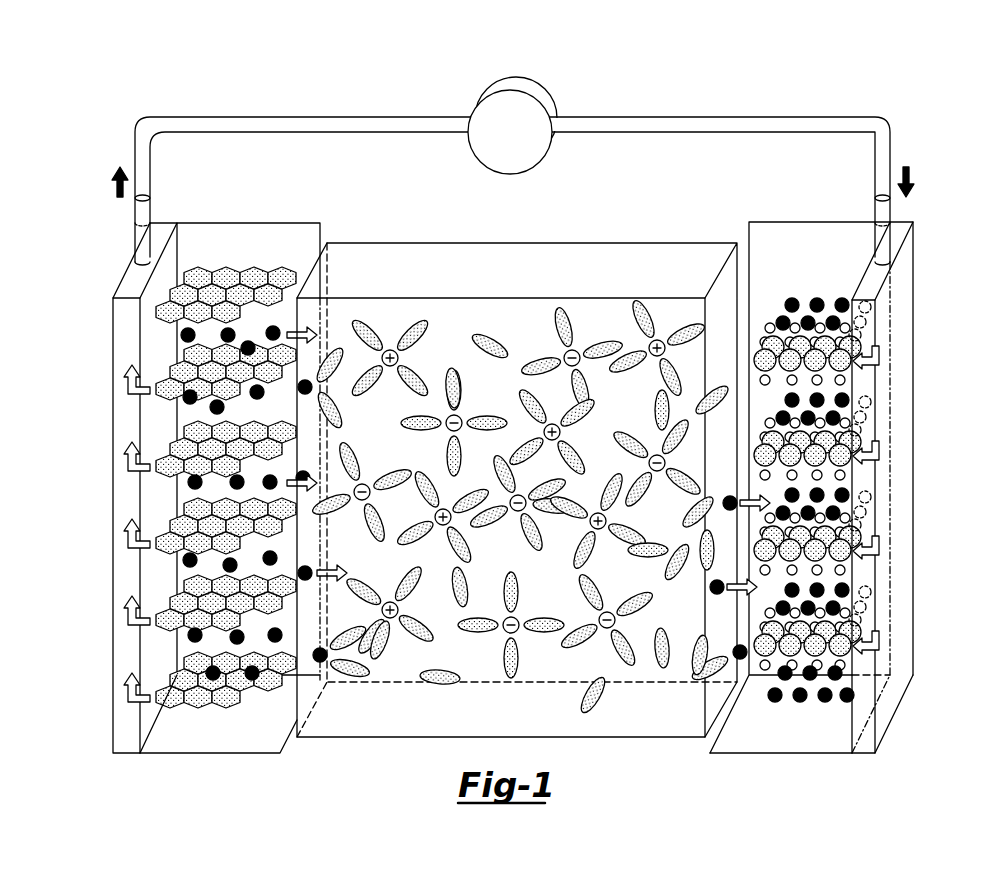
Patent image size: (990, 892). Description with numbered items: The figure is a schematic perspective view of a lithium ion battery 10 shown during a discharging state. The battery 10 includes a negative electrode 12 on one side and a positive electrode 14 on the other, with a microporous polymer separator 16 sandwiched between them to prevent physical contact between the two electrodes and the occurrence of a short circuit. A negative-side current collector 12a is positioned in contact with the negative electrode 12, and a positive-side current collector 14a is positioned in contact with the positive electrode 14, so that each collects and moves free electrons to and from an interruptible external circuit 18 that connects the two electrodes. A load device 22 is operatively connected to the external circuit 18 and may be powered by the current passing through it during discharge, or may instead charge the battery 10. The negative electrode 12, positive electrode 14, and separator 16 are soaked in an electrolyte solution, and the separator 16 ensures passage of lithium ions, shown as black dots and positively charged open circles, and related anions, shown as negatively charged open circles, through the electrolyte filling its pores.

The lithium ion battery 10 is at (510, 438).
The negative electrode 12 is at (213, 757).
The negative-side current collector 12a is at (127, 731).
The positive electrode 14 is at (747, 758).
The positive-side current collector 14a is at (863, 745).
The microporous polymer separator 16 is at (320, 738).
The external circuit 18 is at (366, 117).
The load device 22 is at (552, 98).